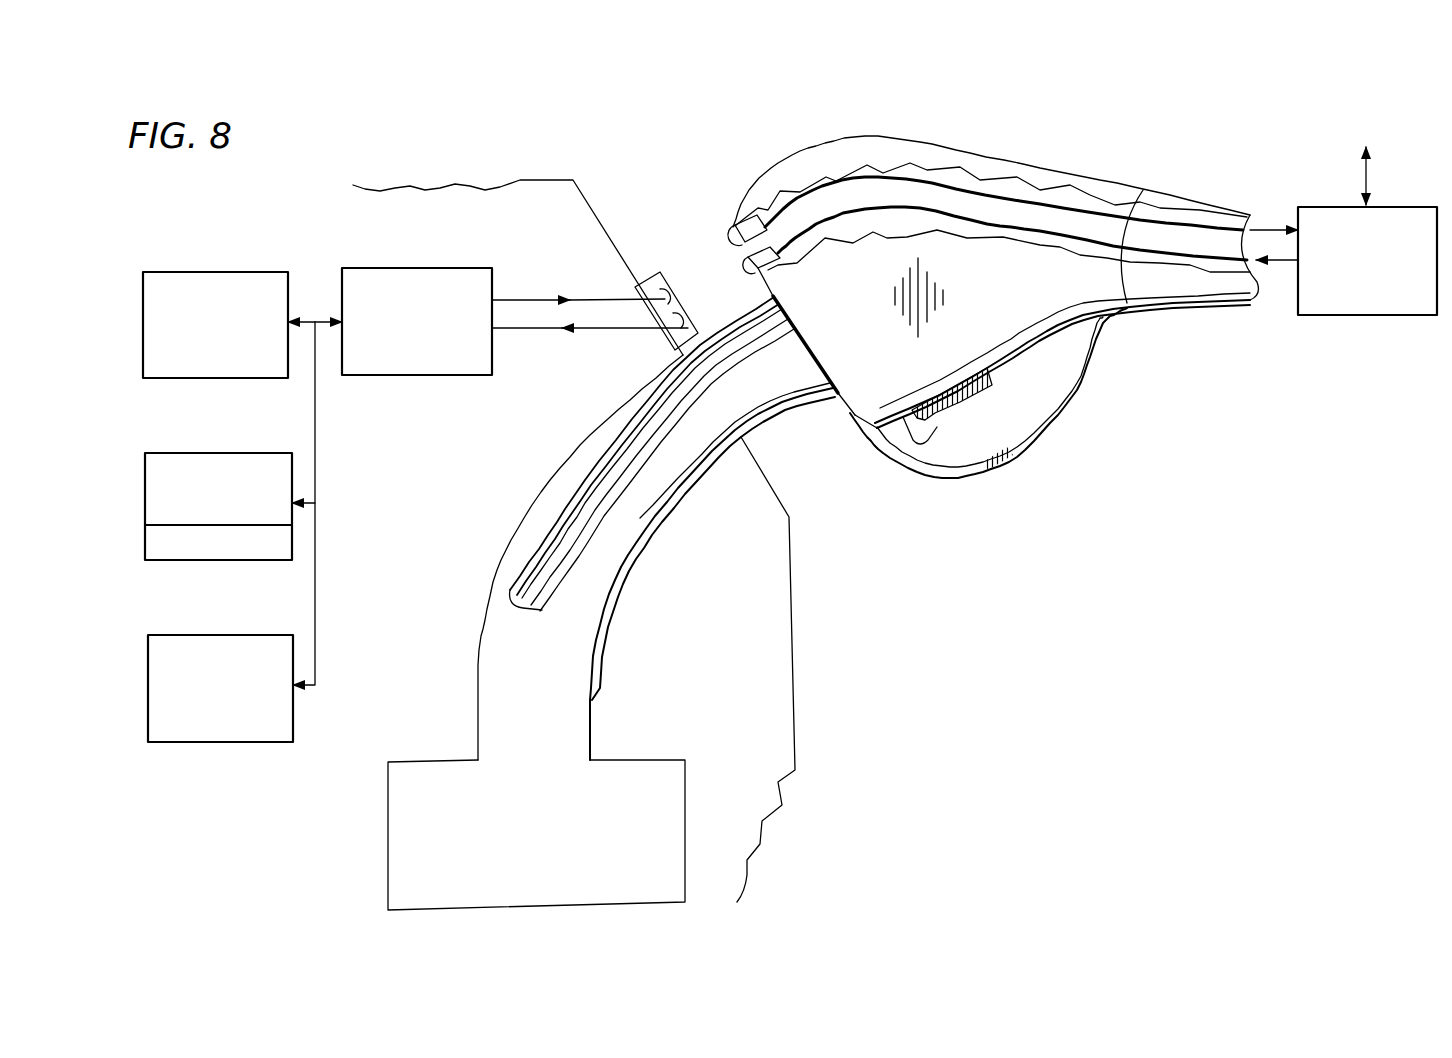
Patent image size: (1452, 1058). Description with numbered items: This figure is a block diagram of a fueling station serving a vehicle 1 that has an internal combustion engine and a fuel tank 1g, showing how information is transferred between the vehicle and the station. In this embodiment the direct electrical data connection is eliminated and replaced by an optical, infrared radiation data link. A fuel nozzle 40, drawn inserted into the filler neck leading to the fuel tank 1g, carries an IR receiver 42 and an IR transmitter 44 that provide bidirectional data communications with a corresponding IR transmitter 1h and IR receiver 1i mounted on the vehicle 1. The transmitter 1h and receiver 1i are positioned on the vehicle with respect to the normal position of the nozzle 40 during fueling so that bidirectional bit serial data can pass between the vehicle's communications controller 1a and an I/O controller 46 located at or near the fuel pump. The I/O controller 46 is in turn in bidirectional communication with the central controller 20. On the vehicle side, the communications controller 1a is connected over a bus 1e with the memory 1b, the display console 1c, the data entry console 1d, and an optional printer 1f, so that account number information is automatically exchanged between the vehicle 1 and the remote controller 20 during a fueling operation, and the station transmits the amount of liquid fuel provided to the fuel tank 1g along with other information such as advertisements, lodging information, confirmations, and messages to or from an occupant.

The vehicle 1 is at (432, 168).
The communications controller 1a is at (382, 268).
The memory 1b is at (183, 272).
The display console 1c is at (188, 453).
The data entry console 1d is at (190, 635).
The bus 1e is at (318, 537).
The printer 1f is at (145, 547).
The fuel tank 1g is at (630, 757).
The IR transmitter 1h is at (670, 281).
The IR receiver 1i is at (686, 322).
The central controller 20 is at (1356, 131).
The fuel nozzle 40 is at (949, 135).
The IR receiver 42 is at (730, 238).
The IR transmitter 44 is at (745, 255).
The I/O controller 46 is at (1362, 318).